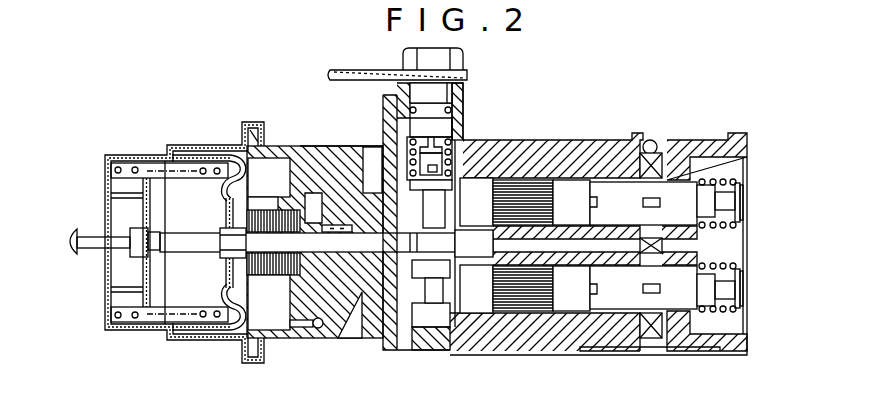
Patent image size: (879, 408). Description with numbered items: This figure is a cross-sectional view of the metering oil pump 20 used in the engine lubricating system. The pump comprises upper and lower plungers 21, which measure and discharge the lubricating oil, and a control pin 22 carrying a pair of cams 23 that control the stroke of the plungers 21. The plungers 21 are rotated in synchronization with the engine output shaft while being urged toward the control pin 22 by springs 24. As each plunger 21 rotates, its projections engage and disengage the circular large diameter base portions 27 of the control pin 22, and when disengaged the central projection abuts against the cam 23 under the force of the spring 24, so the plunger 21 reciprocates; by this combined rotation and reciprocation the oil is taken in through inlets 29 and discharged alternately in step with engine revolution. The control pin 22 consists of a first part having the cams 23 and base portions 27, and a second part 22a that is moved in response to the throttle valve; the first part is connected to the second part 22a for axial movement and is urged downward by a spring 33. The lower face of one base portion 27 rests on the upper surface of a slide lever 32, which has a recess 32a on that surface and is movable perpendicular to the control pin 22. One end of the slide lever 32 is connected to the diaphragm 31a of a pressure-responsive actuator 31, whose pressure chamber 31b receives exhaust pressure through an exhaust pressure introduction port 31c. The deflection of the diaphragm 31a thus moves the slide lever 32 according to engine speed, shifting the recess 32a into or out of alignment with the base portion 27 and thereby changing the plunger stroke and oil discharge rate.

The metering oil pump 20 is at (549, 141).
The plunger 21 is at (575, 198).
The control pin 22 is at (440, 325).
The second part of the control pin 22a is at (443, 95).
The cam 23 is at (430, 203).
The spring 24 is at (722, 179).
The large diameter base portion 27 is at (420, 183).
The inlet 29 is at (652, 177).
The actuator 31 is at (198, 146).
The diaphragm 31a is at (227, 273).
The pressure chamber 31b is at (275, 317).
The exhaust pressure introduction port 31c is at (320, 327).
The slide lever 32 is at (370, 292).
The recess 32a is at (340, 152).
The spring 33 is at (463, 140).